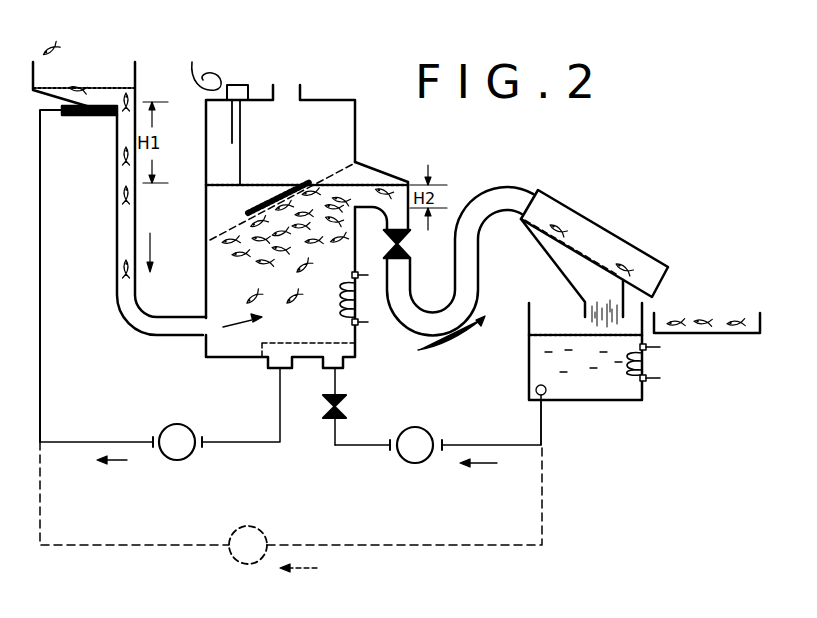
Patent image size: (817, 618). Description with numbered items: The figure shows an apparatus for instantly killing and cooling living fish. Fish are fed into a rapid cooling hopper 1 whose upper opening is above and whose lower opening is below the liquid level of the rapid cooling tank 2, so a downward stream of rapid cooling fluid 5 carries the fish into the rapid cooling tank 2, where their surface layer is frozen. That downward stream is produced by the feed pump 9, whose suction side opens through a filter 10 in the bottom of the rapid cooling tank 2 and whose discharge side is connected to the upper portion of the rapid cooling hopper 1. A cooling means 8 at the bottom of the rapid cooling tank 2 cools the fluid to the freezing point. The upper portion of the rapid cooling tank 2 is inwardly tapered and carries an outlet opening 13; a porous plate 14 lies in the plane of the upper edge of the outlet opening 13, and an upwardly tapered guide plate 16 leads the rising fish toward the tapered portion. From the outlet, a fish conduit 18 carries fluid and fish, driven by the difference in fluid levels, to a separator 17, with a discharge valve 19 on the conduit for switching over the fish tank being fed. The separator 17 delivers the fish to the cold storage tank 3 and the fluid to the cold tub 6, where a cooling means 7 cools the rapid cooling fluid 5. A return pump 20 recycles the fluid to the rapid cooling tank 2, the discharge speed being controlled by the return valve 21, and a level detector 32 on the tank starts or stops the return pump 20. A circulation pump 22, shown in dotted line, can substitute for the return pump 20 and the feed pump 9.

The rapid cooling hopper 1 is at (136, 72).
The rapid cooling tank 2 is at (202, 278).
The cold storage tank 3 is at (760, 325).
The rapid cooling fluid 5 is at (622, 393).
The cold tub 6 is at (529, 370).
The cooling means 7 is at (643, 363).
The cooling means 8 is at (363, 322).
The feed pump 9 is at (177, 460).
The filter 10 is at (268, 358).
The outlet opening 13 is at (360, 175).
The porous plate 14 is at (352, 160).
The guide plate 16 is at (304, 186).
The separator 17 is at (600, 228).
The fish conduit 18 is at (478, 292).
The discharge valve 19 is at (410, 258).
The return pump 20 is at (415, 463).
The return valve 21 is at (327, 418).
The circulation pump 22 is at (250, 565).
The level detector 32 is at (245, 84).